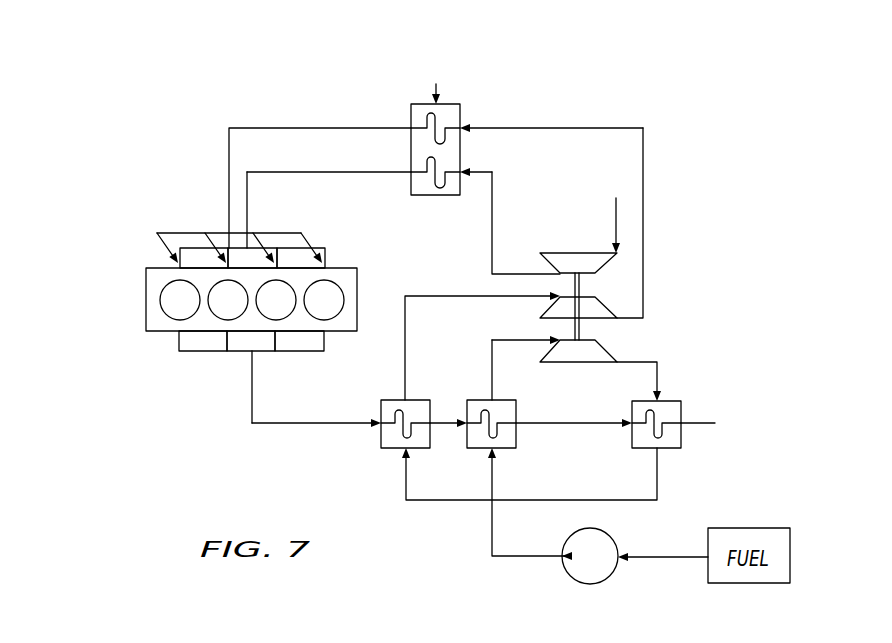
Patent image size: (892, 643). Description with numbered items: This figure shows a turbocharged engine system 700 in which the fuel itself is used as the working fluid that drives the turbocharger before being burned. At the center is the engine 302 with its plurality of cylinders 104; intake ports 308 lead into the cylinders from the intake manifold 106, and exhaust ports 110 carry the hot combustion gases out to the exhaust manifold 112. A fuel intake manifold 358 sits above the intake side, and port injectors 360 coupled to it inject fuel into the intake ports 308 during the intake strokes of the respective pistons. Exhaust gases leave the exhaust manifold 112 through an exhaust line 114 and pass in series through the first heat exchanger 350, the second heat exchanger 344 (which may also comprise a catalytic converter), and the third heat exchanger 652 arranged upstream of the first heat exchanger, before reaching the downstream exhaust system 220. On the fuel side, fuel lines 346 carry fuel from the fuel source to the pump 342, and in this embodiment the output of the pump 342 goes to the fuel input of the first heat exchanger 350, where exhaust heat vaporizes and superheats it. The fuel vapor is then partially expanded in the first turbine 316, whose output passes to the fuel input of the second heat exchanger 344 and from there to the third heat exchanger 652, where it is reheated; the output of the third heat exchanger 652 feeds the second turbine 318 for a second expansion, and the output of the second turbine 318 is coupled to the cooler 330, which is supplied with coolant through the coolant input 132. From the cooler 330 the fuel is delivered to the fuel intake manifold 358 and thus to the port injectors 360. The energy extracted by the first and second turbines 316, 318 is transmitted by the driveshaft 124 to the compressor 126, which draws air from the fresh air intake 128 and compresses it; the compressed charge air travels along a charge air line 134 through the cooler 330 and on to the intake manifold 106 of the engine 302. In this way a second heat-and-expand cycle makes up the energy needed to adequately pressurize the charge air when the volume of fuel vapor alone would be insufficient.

The turbocharged engine system 700 is at (246, 75).
The engine 302 is at (86, 282).
The cylinders 104 is at (167, 302).
The intake manifold 106 is at (212, 238).
The fuel intake manifold 358 is at (174, 232).
The port injectors 360 is at (156, 244).
The intake ports 308 is at (273, 240).
The exhaust ports 110 is at (177, 342).
The exhaust manifold 112 is at (238, 353).
The exhaust line 114 is at (273, 425).
The fuel lines 346 is at (315, 127).
The charge air line 134 is at (347, 173).
The cooler 330 is at (450, 110).
The coolant input 132 is at (436, 90).
The fresh air intake 128 is at (613, 217).
The compressor 126 is at (578, 253).
The driveshaft 124 is at (580, 282).
The second turbine 318 is at (595, 312).
The first turbine 316 is at (577, 357).
The third heat exchanger 652 is at (392, 438).
The first heat exchanger 350 is at (475, 438).
The second heat exchanger 344 is at (682, 435).
The downstream exhaust system 220 is at (700, 420).
The pump 342 is at (588, 573).